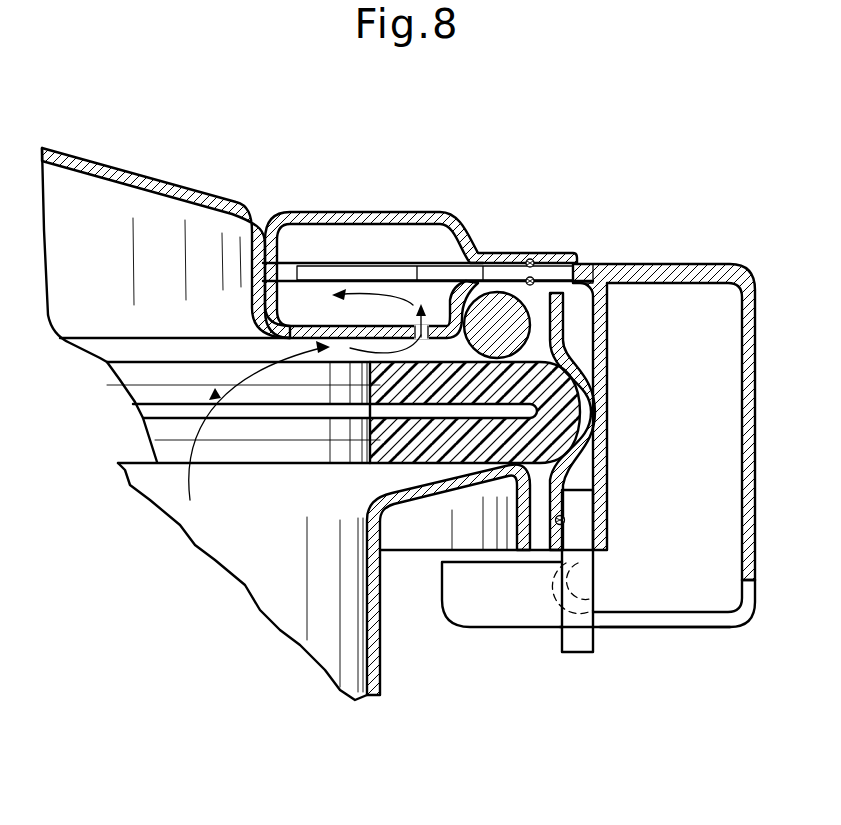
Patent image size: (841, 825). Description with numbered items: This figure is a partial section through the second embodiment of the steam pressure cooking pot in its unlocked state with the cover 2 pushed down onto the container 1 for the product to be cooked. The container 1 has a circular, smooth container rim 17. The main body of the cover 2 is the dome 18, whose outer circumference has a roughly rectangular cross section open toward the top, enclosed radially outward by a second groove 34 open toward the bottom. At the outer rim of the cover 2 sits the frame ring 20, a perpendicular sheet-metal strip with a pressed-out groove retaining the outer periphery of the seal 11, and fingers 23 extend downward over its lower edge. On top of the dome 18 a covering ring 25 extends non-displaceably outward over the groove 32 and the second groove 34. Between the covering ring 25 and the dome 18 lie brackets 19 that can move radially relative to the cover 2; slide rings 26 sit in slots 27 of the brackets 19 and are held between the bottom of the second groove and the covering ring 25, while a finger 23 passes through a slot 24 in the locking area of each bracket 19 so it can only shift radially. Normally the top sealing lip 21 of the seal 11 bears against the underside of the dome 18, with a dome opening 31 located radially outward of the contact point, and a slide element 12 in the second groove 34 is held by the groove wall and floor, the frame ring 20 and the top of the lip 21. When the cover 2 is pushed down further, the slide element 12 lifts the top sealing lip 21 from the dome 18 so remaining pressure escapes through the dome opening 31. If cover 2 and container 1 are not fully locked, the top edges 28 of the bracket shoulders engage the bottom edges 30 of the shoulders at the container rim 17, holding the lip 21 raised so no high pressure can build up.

The container 1 is at (250, 557).
The cover 2 is at (107, 212).
The seal 11 is at (578, 505).
The slide element 12 is at (501, 320).
The container rim 17 is at (418, 490).
The dome 18 is at (182, 193).
The bracket 19 is at (722, 266).
The frame ring 20 is at (608, 270).
The top sealing lip 21 is at (125, 385).
The finger 23 is at (575, 637).
The slot 24 is at (677, 624).
The covering ring 25 is at (455, 235).
The slide ring 26 is at (557, 262).
The slot 27 is at (590, 264).
The top edge 28 is at (535, 552).
The bottom edge 30 is at (523, 552).
The dome opening 31 is at (428, 335).
The groove 32 is at (315, 307).
The second groove 34 is at (540, 320).